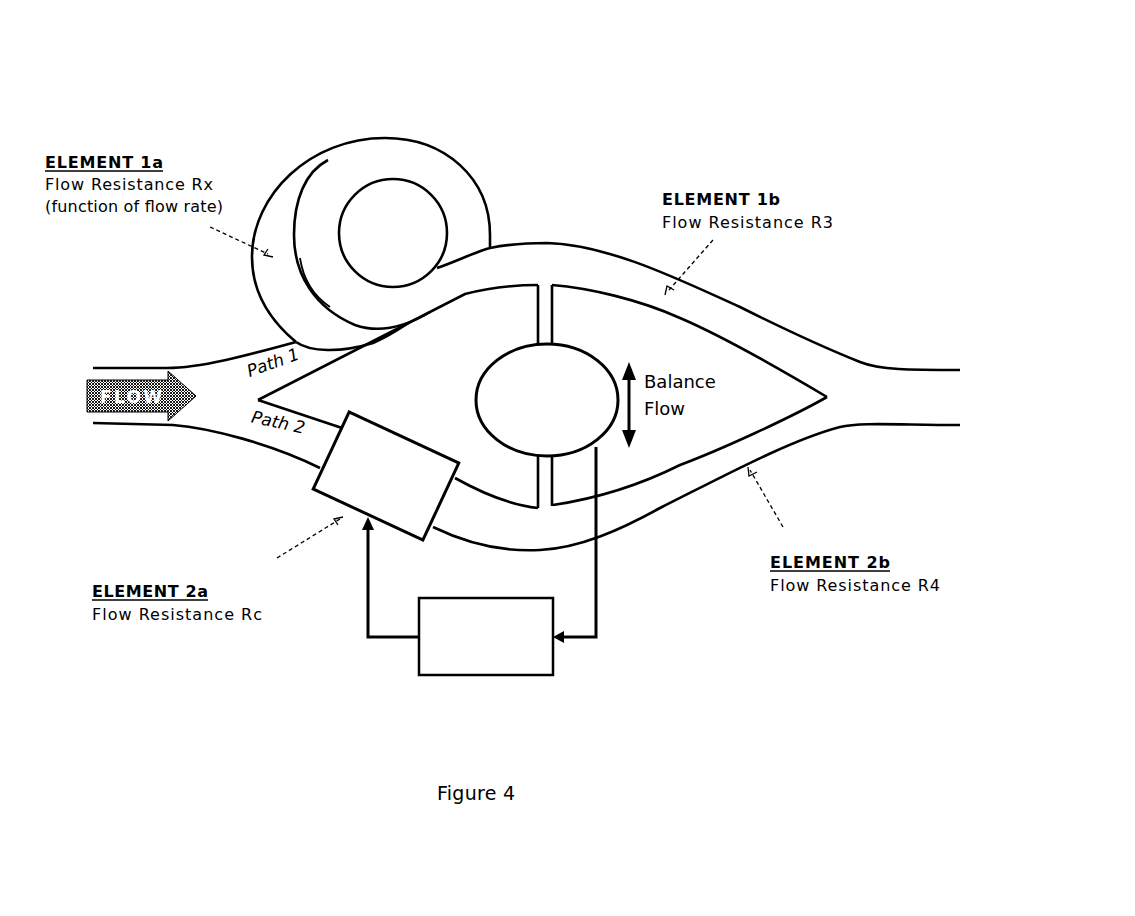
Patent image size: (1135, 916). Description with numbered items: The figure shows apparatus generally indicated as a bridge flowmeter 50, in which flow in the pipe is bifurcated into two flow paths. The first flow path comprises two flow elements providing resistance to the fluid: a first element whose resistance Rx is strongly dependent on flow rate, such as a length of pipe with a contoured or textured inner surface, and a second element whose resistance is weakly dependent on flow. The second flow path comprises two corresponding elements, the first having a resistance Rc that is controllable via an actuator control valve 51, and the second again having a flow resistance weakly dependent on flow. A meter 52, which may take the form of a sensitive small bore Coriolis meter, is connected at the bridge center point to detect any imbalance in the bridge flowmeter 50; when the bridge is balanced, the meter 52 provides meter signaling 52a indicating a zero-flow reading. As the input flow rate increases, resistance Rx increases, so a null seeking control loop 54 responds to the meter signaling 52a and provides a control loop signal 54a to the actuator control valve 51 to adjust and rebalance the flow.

The bridge flowmeter 50 is at (823, 108).
The actuator control valve 51 is at (318, 477).
The meter 52 is at (577, 344).
The meter signaling 52a is at (600, 588).
The null seeking control loop 54 is at (527, 675).
The control loop signal 54a is at (365, 593).